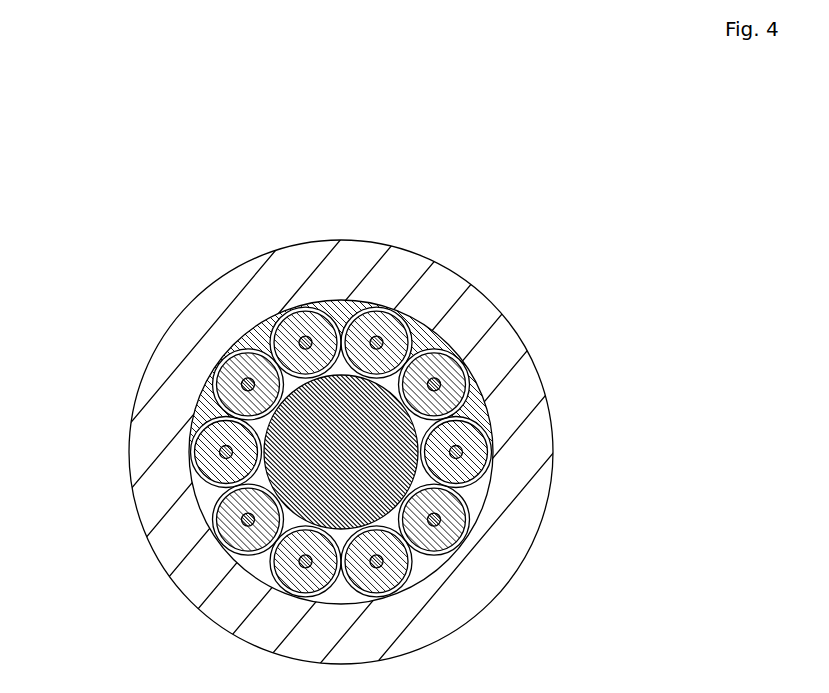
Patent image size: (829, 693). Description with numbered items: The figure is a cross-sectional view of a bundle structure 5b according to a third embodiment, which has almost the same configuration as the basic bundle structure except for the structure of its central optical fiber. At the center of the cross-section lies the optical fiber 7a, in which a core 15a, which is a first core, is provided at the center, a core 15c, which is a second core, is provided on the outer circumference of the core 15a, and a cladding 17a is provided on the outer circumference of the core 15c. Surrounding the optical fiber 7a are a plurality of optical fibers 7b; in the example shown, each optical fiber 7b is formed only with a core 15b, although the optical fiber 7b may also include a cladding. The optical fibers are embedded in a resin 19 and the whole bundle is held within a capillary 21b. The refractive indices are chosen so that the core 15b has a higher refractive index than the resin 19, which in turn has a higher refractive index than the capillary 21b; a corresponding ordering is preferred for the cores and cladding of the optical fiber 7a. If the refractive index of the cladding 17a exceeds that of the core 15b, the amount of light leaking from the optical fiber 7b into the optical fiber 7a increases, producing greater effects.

The bundle structure 5b is at (206, 401).
The optical fiber 7a is at (220, 526).
The optical fiber 7b is at (486, 434).
The core 15a is at (440, 386).
The core 15b is at (467, 535).
The core 15c is at (468, 412).
The cladding 17a is at (306, 308).
The resin 19 is at (263, 338).
The capillary 21b is at (510, 353).